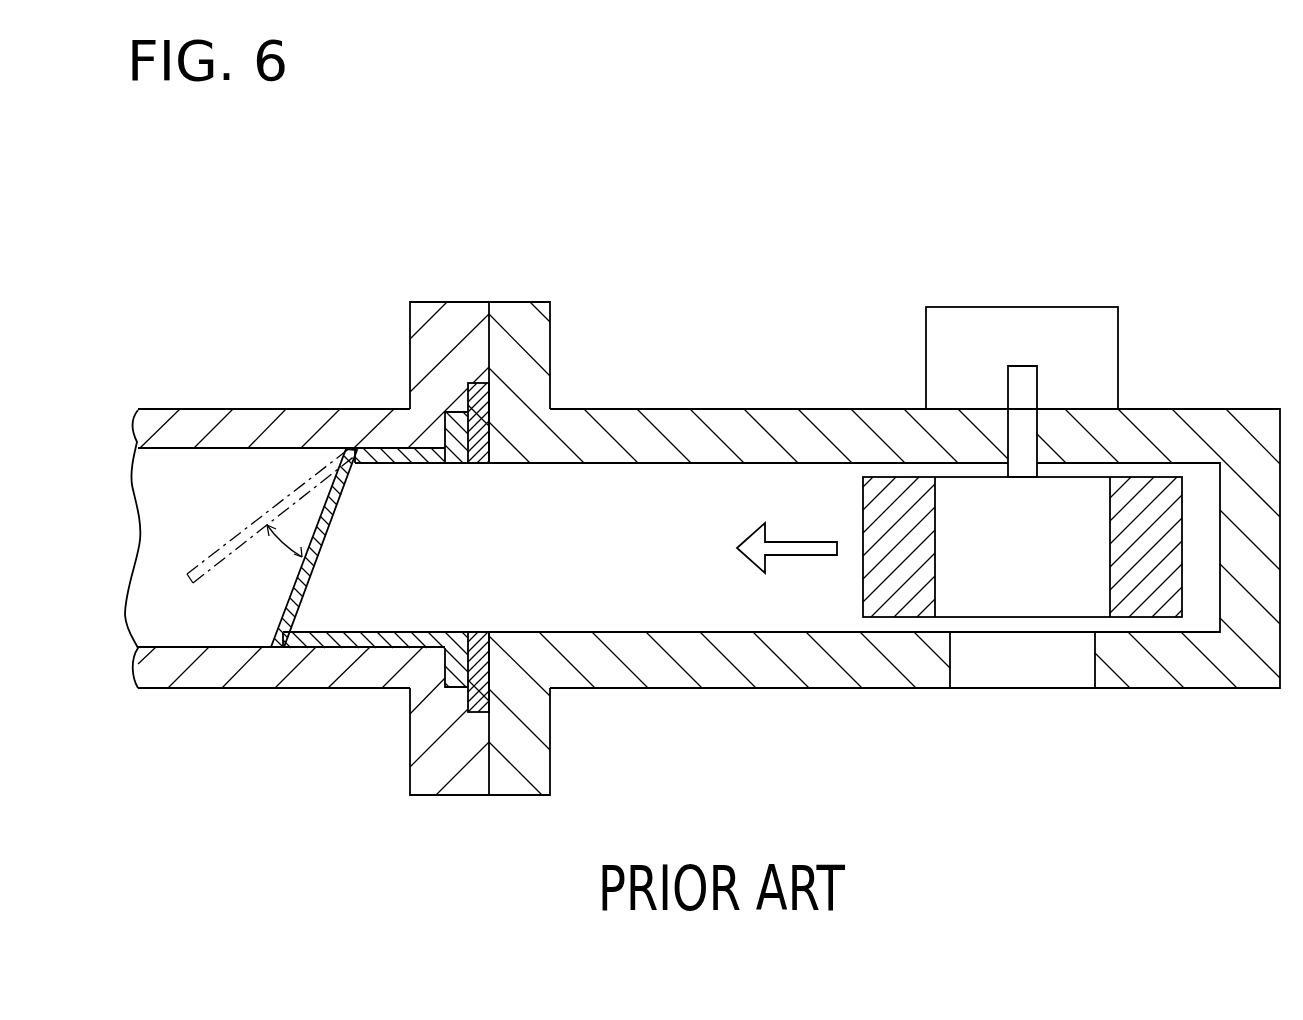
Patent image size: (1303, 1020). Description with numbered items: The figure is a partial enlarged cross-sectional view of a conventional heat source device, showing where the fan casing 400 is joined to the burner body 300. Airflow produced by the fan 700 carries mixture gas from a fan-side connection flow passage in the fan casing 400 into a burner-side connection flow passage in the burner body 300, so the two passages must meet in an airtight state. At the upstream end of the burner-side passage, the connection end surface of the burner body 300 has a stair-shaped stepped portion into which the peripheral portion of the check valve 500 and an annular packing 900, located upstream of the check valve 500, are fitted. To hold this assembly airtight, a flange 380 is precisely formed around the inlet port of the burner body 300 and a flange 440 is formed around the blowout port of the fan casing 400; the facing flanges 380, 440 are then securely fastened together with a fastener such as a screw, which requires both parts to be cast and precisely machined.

The burner body 300 is at (211, 409).
The flange 380 is at (410, 353).
The flange 440 is at (552, 355).
The fan casing 400 is at (670, 409).
The check valve 500 is at (365, 632).
The annular packing 900 is at (478, 632).
The fan 700 is at (1145, 600).